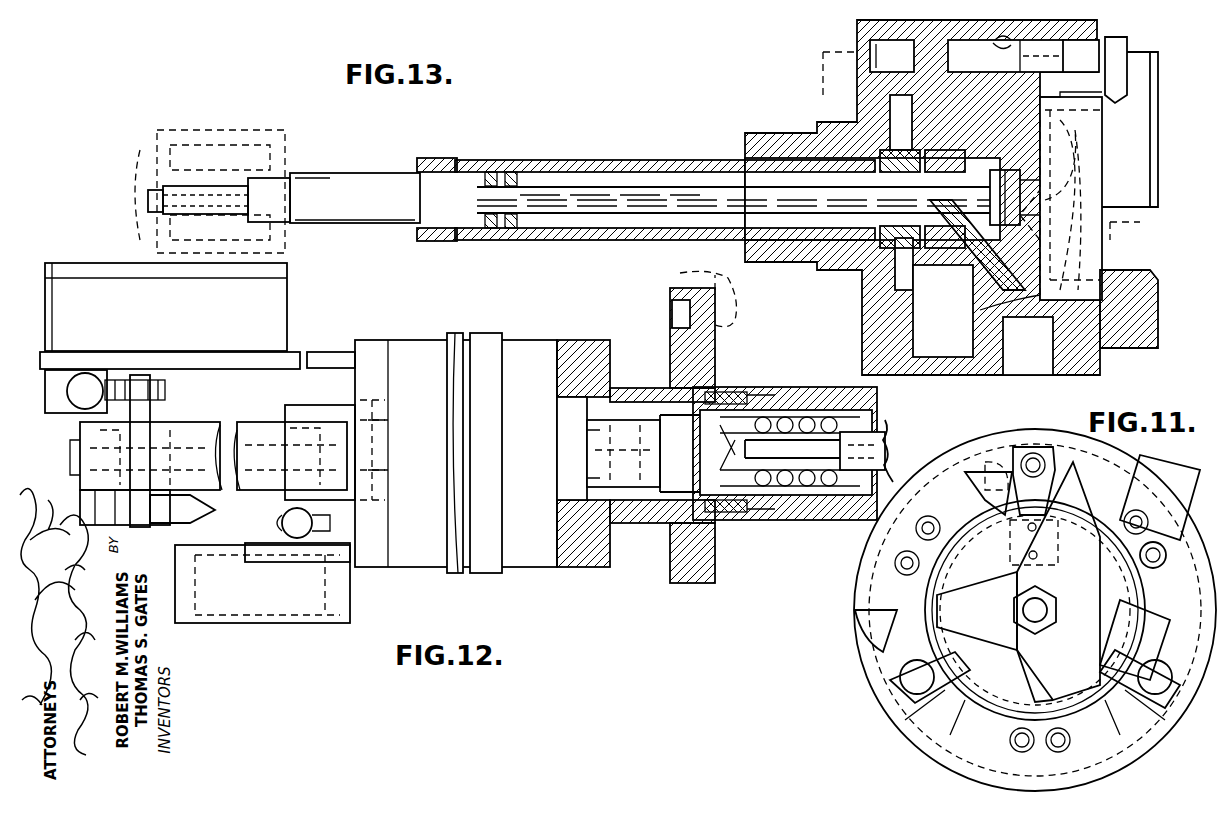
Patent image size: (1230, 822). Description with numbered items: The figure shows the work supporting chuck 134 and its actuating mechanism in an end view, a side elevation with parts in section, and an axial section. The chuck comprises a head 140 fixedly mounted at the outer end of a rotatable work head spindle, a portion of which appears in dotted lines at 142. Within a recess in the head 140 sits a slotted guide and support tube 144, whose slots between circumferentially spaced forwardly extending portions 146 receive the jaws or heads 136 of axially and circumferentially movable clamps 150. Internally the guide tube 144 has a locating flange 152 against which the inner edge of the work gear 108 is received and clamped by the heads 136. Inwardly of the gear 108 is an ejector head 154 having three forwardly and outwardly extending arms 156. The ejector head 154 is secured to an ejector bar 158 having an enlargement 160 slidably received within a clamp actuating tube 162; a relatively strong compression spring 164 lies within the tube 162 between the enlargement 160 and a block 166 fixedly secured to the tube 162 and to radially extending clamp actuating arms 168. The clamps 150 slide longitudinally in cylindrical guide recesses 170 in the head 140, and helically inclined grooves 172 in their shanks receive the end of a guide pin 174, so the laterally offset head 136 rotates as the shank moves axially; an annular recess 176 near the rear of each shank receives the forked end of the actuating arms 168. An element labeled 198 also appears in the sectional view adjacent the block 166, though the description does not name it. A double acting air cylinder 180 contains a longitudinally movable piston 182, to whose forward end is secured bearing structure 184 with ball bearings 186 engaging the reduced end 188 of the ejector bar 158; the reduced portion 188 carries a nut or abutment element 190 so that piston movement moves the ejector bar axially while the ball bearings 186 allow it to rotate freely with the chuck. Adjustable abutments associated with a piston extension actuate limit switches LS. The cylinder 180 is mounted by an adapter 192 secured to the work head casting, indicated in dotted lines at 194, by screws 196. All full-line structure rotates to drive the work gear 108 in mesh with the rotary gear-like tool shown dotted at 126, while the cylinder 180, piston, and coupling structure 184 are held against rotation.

In FIG. 13, the work gear 108 is at (1103, 248).
In FIG. 13, the rotary gear-like tool 126 is at (1142, 222).
In FIG. 13, the work supporting chuck 134 is at (1130, 352).
In FIG. 13, the jaw or head of clamp 136 is at (1126, 68).
In FIG. 11, the jaw or head of clamp 136 is at (937, 693).
In FIG. 13, the head 140 is at (1098, 375).
In FIG. 11, the head 140 is at (1152, 492).
In FIG. 13, the work head spindle 142 is at (823, 52).
In FIG. 13, the slotted guide and support tube 144 is at (1160, 288).
In FIG. 11, the slotted guide and support tube 144 is at (953, 472).
In FIG. 11, the forwardly extending portions 146 is at (897, 612).
In FIG. 13, the clamp 150 is at (1080, 55).
In FIG. 11, the clamp 150 is at (1040, 460).
In FIG. 13, the locating flange 152 is at (1045, 112).
In FIG. 13, the ejector head 154 is at (1015, 277).
In FIG. 11, the ejector head 154 is at (1090, 640).
In FIG. 11, the arms 156 is at (972, 595).
In FIG. 13, the ejector bar 158 is at (775, 190).
In FIG. 12, the ejector bar 158 is at (900, 452).
In FIG. 11, the ejector bar 158 is at (1022, 620).
In FIG. 13, the enlargement 160 is at (355, 223).
In FIG. 12, the enlargement 160 is at (888, 432).
In FIG. 13, the clamp actuating tube 162 is at (703, 158).
In FIG. 13, the compression spring 164 is at (520, 232).
In FIG. 13, the block 166 is at (960, 280).
In FIG. 13, the clamp actuating arms 168 is at (860, 84).
In FIG. 11, the clamp actuating arms 168 is at (1058, 490).
In FIG. 13, the cylindrical guide recesses 170 is at (1023, 56).
In FIG. 13, the helically inclined grooves 172 is at (1059, 58).
In FIG. 13, the guide pin 174 is at (999, 55).
In FIG. 13, the annular recess 176 is at (892, 56).
In FIG. 12, the double acting air cylinder 180 is at (487, 340).
In FIG. 12, the piston 182 is at (620, 420).
In FIG. 12, the bearing structure 184 is at (777, 384).
In FIG. 12, the ball bearings 186 is at (808, 520).
In FIG. 13, the reduced end of ejector bar 188 is at (215, 203).
In FIG. 12, the reduced end of ejector bar 188 is at (790, 443).
In FIG. 12, the nut or abutment element 190 is at (742, 480).
In FIG. 12, the adapter 192 is at (598, 567).
In FIG. 12, the work head casting 194 is at (690, 272).
In FIG. 12, the screws 196 is at (672, 303).
In FIG. 13, the opening 198 is at (973, 344).
In FIG. 12, the limit switches LS is at (52, 410).